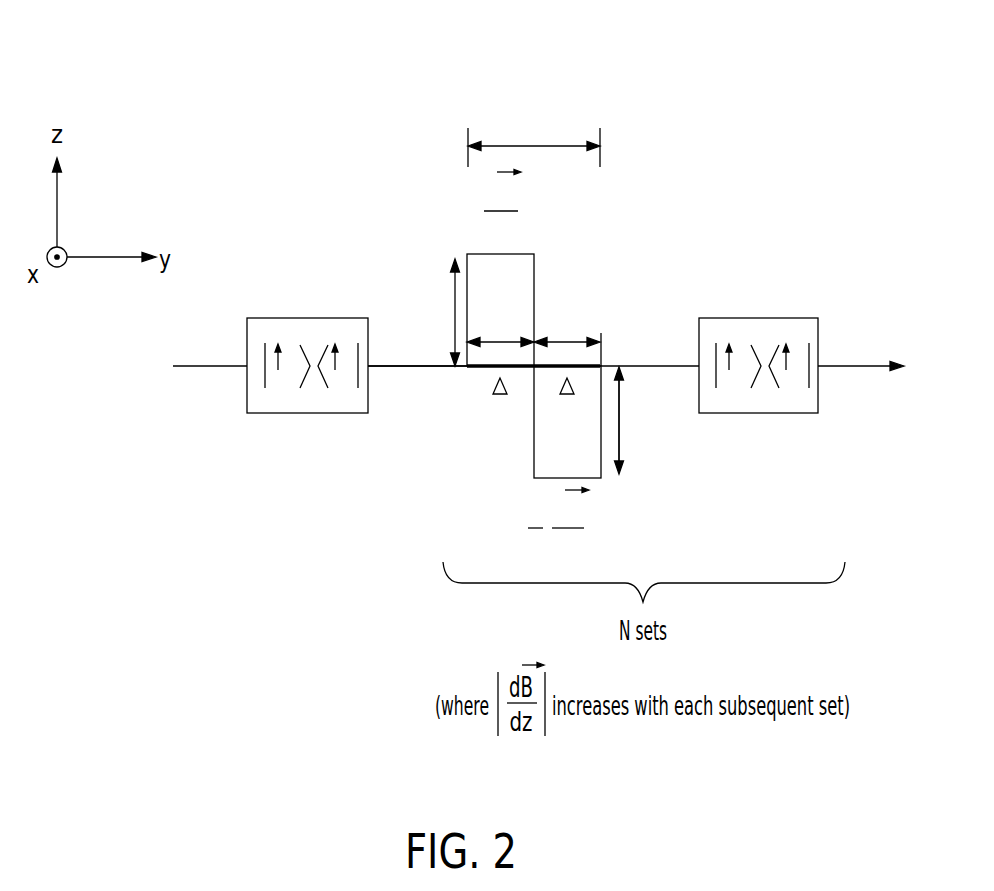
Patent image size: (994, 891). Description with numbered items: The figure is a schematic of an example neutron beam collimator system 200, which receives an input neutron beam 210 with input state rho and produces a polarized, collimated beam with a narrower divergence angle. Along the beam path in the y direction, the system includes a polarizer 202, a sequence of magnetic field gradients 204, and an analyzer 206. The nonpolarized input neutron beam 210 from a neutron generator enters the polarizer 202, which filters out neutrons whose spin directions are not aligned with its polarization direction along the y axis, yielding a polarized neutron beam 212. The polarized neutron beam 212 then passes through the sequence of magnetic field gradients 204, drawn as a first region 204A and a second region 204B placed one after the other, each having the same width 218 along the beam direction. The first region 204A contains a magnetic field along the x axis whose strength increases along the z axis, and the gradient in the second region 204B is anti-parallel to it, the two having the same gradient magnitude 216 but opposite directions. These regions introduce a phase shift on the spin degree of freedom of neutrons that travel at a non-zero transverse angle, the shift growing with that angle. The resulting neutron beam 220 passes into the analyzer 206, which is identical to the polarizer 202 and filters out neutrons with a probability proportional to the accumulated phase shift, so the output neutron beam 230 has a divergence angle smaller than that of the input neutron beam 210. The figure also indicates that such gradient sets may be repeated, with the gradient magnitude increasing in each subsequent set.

The neutron beam collimator system 200 is at (96, 82).
The polarizer 202 is at (308, 318).
The sequence of magnetic field gradients 204 is at (537, 145).
The first region 204A is at (478, 303).
The second region 204B is at (590, 454).
The analyzer 206 is at (757, 318).
The input neutron beam 210 is at (200, 368).
The polarized neutron beam 212 is at (425, 368).
The gradient magnitude 216 is at (453, 300).
The width 218 is at (500, 338).
The neutron beam 220 is at (619, 364).
The output neutron beam 230 is at (864, 364).